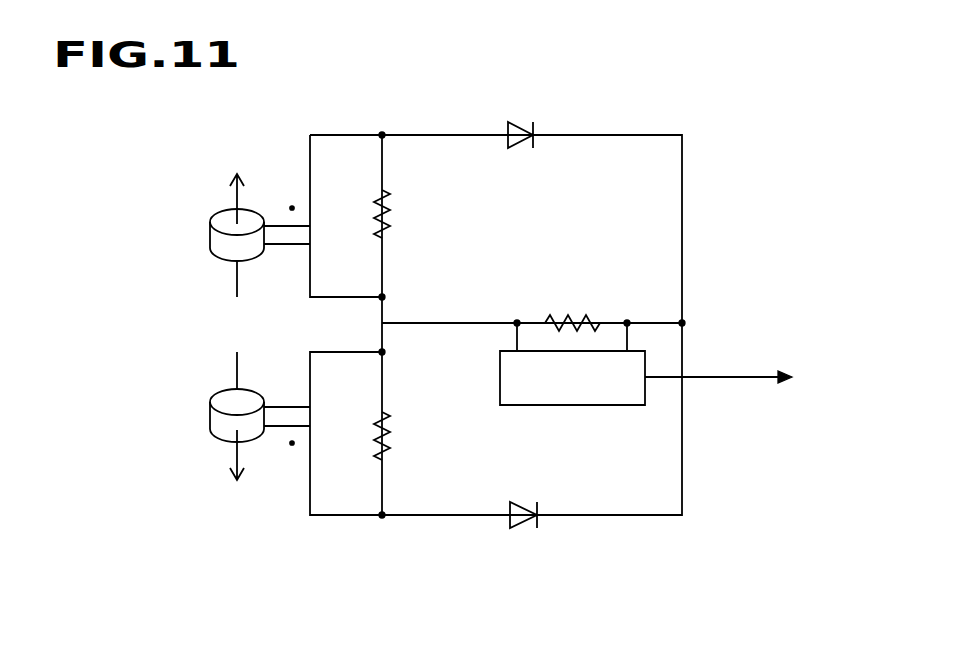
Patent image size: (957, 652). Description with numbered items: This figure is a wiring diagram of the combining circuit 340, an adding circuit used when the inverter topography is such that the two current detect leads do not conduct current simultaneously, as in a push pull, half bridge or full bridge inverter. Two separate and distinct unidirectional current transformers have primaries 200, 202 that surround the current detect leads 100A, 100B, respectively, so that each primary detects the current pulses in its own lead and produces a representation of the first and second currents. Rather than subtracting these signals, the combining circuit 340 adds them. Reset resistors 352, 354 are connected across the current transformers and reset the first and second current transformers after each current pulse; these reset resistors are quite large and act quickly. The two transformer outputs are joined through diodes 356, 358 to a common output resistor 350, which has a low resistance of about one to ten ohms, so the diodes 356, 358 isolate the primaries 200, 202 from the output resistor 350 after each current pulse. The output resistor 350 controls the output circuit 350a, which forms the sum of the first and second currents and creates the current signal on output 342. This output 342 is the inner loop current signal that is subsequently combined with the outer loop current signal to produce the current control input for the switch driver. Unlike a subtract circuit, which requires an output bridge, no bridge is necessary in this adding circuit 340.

The combining circuit 340 is at (613, 108).
The primary of current transformer CT1 200 is at (222, 210).
The primary of current transformer CT2 202 is at (222, 392).
The current detect lead 100A is at (237, 295).
The current detect lead 100B is at (237, 453).
The reset resistor 352 is at (388, 234).
The reset resistor 354 is at (388, 413).
The diode 356 is at (522, 122).
The diode 358 is at (520, 528).
The output resistor 350 is at (597, 322).
The output circuit 350a is at (645, 362).
The output 342 is at (731, 380).